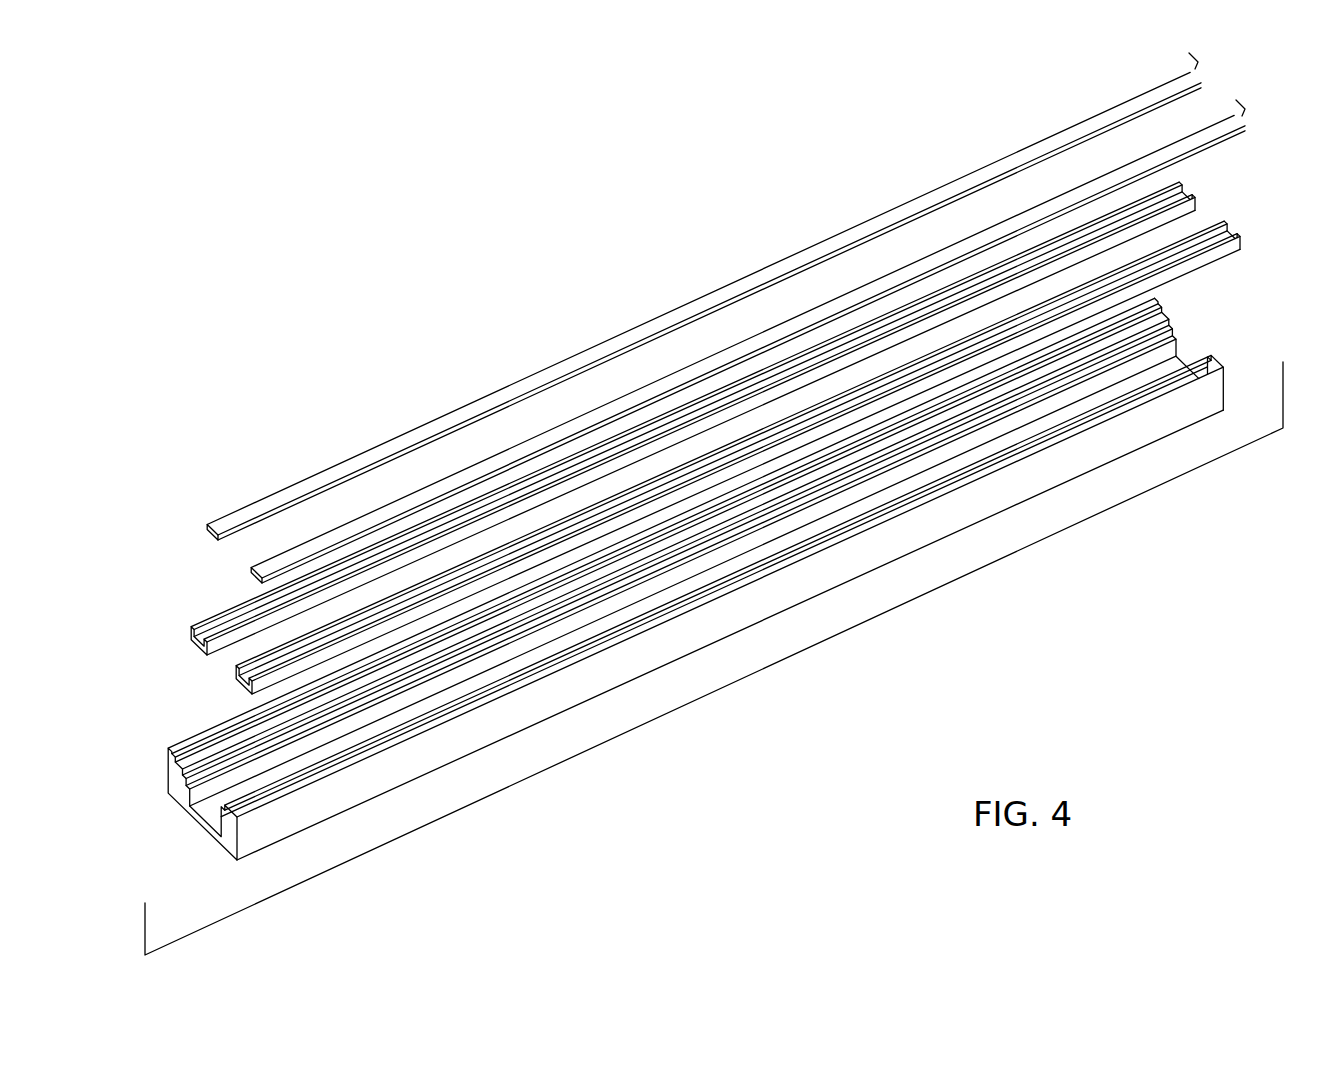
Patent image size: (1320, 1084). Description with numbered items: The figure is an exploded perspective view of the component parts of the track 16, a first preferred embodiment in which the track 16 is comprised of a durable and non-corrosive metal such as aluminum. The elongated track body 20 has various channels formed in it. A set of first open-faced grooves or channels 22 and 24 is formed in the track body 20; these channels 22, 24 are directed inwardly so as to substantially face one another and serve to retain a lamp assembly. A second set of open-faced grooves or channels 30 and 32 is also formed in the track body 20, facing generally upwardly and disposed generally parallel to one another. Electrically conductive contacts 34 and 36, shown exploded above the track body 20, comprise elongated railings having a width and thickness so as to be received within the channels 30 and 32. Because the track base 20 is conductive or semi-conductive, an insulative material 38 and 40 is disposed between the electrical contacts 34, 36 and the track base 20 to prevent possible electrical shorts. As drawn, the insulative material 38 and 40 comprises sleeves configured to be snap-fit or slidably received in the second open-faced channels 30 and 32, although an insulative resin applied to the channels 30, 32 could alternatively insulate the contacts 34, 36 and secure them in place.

The track 16 is at (843, 632).
The track body 20 is at (661, 599).
The first open-faced channel 22 is at (172, 757).
The first open-faced channel 24 is at (232, 818).
The second open-faced channel 30 is at (183, 778).
The second open-faced channel 32 is at (228, 832).
The electrically conductive contact 34 is at (338, 470).
The electrically conductive contact 36 is at (442, 487).
The insulative material 38 is at (202, 633).
The insulative material 40 is at (280, 672).